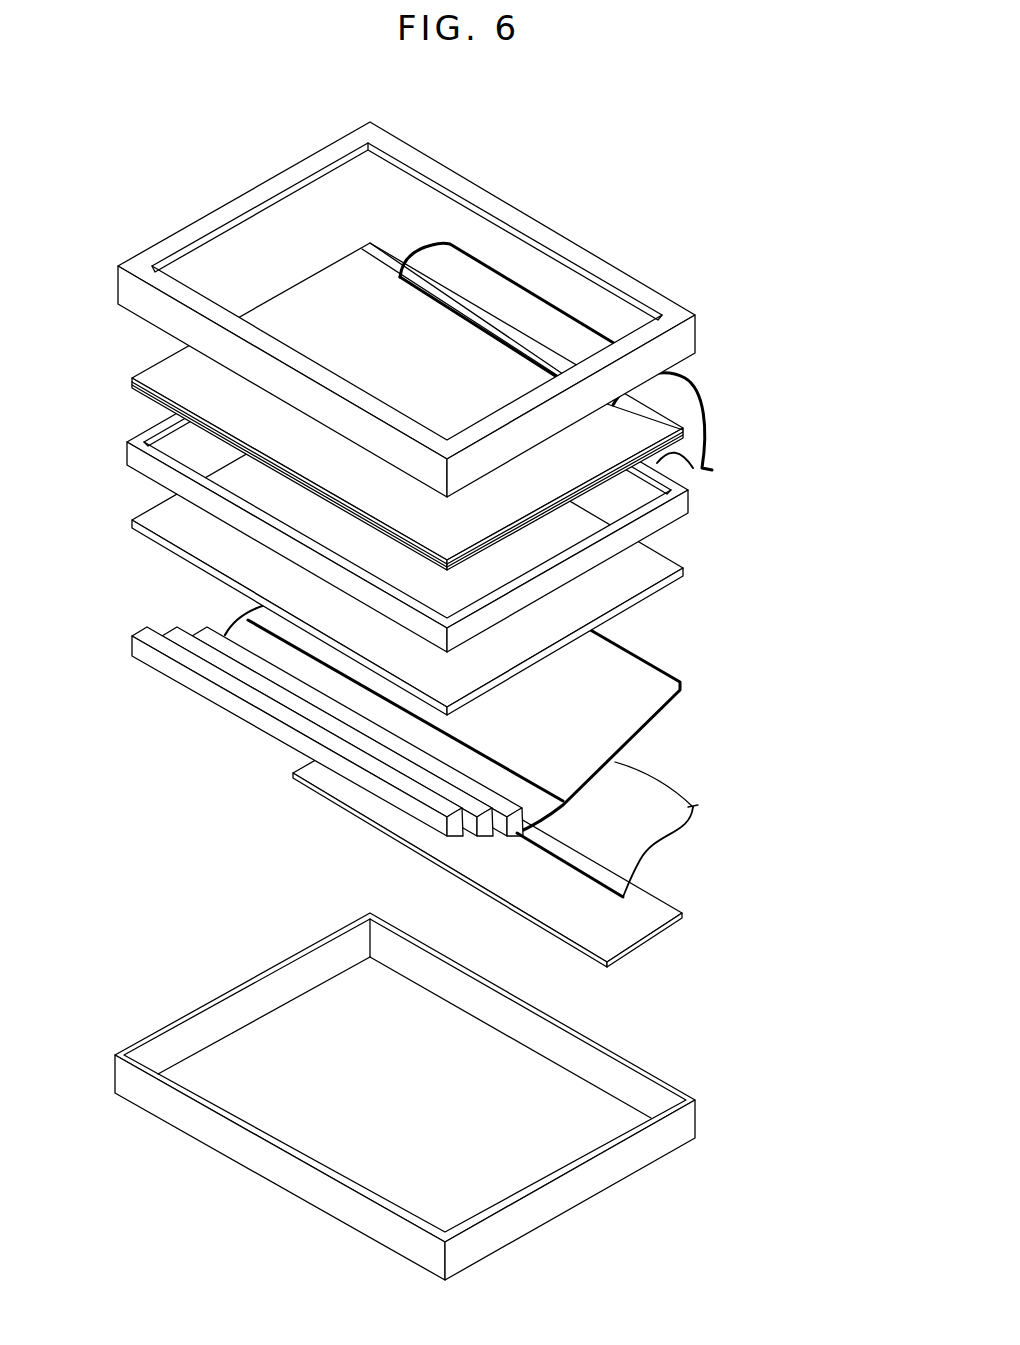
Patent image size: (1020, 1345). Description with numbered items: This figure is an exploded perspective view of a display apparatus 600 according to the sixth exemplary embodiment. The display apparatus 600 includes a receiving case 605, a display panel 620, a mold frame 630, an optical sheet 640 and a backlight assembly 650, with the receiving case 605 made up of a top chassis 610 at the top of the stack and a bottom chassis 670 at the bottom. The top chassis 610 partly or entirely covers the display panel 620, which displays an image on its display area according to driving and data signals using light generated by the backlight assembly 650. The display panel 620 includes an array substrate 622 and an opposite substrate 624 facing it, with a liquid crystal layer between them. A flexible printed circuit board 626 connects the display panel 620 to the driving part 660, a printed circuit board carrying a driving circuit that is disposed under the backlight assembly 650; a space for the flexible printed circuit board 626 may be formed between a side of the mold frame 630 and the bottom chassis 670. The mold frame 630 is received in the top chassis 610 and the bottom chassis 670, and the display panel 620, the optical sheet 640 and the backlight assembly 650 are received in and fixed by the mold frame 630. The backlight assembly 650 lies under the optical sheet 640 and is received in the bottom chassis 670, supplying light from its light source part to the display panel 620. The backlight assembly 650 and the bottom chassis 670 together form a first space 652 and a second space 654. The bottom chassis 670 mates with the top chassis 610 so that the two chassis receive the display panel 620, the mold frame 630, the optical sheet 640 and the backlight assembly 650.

The display apparatus 600 is at (577, 178).
The receiving case 605 is at (793, 1148).
The top chassis 610 is at (620, 272).
The display panel 620 is at (364, 406).
The array substrate 622 is at (131, 383).
The opposite substrate 624 is at (142, 377).
The flexible printed circuit board 626 is at (695, 401).
The mold frame 630 is at (127, 452).
The optical sheet 640 is at (676, 565).
The backlight assembly 650 is at (430, 702).
The first space 652 is at (653, 727).
The second space 654 is at (185, 680).
The driving part 660 is at (630, 923).
The bottom chassis 670 is at (688, 1119).